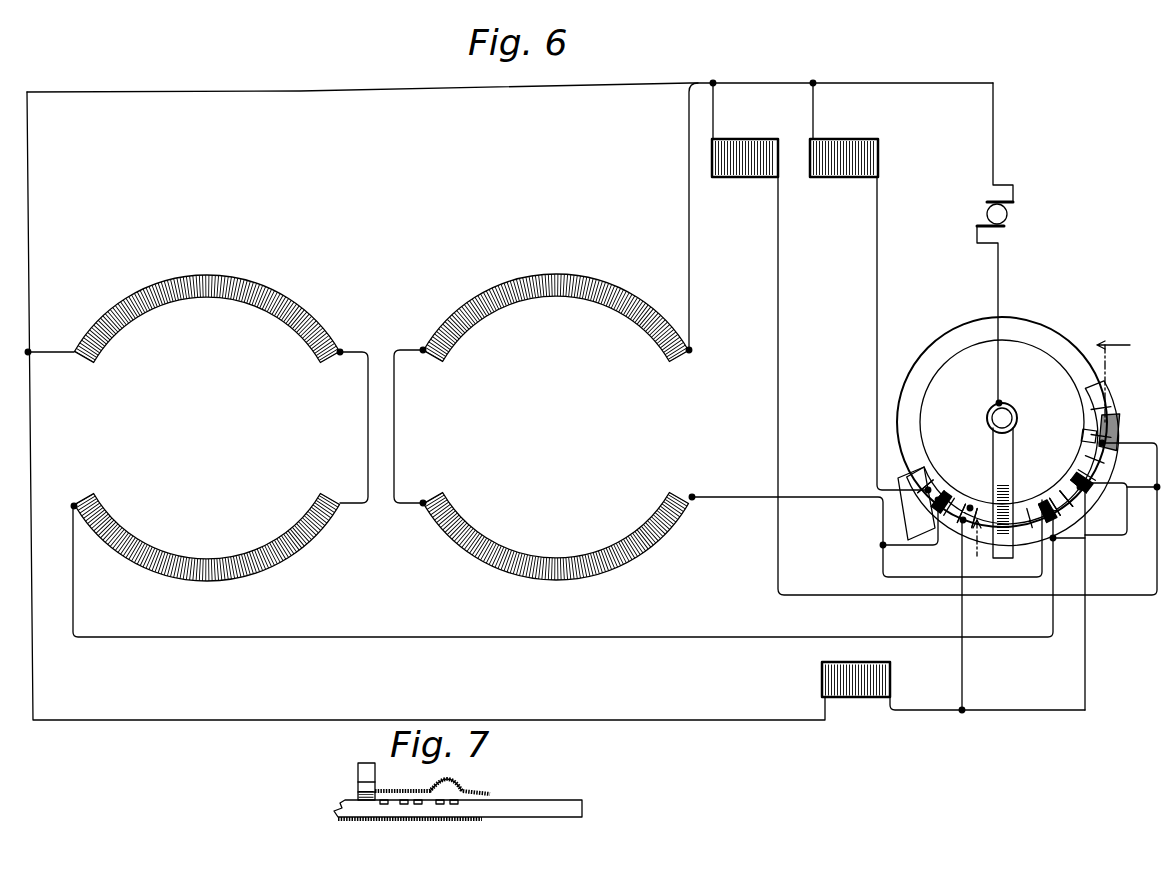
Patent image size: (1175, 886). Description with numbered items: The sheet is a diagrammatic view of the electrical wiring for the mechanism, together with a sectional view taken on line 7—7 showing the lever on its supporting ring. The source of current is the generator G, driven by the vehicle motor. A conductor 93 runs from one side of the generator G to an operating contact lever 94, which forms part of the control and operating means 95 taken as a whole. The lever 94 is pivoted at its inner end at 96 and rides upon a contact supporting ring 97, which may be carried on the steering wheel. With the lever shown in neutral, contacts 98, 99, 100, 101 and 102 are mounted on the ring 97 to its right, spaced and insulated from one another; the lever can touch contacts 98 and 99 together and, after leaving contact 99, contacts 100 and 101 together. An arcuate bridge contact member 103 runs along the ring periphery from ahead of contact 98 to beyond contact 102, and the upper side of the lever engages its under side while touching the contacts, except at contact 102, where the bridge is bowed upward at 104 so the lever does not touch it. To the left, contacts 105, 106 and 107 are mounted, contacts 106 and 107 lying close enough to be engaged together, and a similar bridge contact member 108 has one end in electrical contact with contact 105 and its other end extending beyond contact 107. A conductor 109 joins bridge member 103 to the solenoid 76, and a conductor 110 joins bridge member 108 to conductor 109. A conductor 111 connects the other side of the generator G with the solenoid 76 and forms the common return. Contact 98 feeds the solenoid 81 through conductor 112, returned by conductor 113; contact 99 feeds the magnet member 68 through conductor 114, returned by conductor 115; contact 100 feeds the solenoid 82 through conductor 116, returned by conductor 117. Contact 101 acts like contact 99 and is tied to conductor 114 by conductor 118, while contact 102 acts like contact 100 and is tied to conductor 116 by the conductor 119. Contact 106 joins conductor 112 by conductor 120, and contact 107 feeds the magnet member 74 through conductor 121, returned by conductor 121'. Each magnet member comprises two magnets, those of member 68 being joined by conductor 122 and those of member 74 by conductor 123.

In FIG. 6, the magnet member 68 is at (207, 428).
In FIG. 6, the magnet member 74 is at (557, 427).
In FIG. 6, the solenoid 76 is at (858, 698).
In FIG. 6, the solenoid 81 is at (850, 177).
In FIG. 6, the solenoid 82 is at (745, 177).
In FIG. 6, the conductor 93 is at (1000, 255).
In FIG. 6, the operating contact lever 94 is at (993, 452).
In FIG. 7, the operating contact lever 94 is at (358, 787).
In FIG. 6, the control and operating means 95 is at (1077, 342).
In FIG. 6, the pivot 96 is at (988, 415).
In FIG. 6, the contact supporting ring 97 is at (1085, 372).
In FIG. 7, the contact supporting ring 97 is at (556, 805).
In FIG. 6, the contact 98 is at (1040, 502).
In FIG. 7, the contact 98 is at (384, 804).
In FIG. 6, the contact 99 is at (1057, 495).
In FIG. 7, the contact 99 is at (404, 804).
In FIG. 6, the contact 100 is at (1068, 478).
In FIG. 7, the contact 100 is at (418, 804).
In FIG. 6, the contact 101 is at (1081, 470).
In FIG. 7, the contact 101 is at (440, 804).
In FIG. 6, the contact 102 is at (1088, 430).
In FIG. 7, the contact 102 is at (454, 804).
In FIG. 6, the arcuate bridge contact member 103 is at (1091, 503).
In FIG. 7, the arcuate bridge contact member 103 is at (403, 820).
In FIG. 6, the upwardly bowed portion 104 is at (1110, 440).
In FIG. 7, the upwardly bowed portion 104 is at (450, 782).
In FIG. 6, the contact 105 is at (968, 505).
In FIG. 6, the contact 106 is at (948, 492).
In FIG. 6, the contact 107 is at (934, 486).
In FIG. 6, the bridge contact member 108 is at (920, 510).
In FIG. 6, the conductor 109 is at (915, 711).
In FIG. 6, the conductor 110 is at (963, 665).
In FIG. 6, the conductor 111 is at (305, 91).
In FIG. 6, the conductor 112 is at (878, 255).
In FIG. 6, the conductor 113 is at (815, 105).
In FIG. 6, the conductor 114 is at (470, 636).
In FIG. 6, the conductor 115 is at (52, 352).
In FIG. 6, the conductor 116 is at (779, 262).
In FIG. 6, the conductor 117 is at (714, 105).
In FIG. 6, the conductor 118 is at (1103, 536).
In FIG. 6, the conductor 119 is at (1140, 443).
In FIG. 6, the conductor 120 is at (917, 545).
In FIG. 6, the conductor 121 is at (867, 537).
In FIG. 6, the conductor 121' is at (649, 216).
In FIG. 6, the conductor 122 is at (368, 410).
In FIG. 6, the conductor 123 is at (395, 410).
In FIG. 6, the generator G is at (1007, 214).
In FIG. 6, the section line 7 is at (1058, 453).